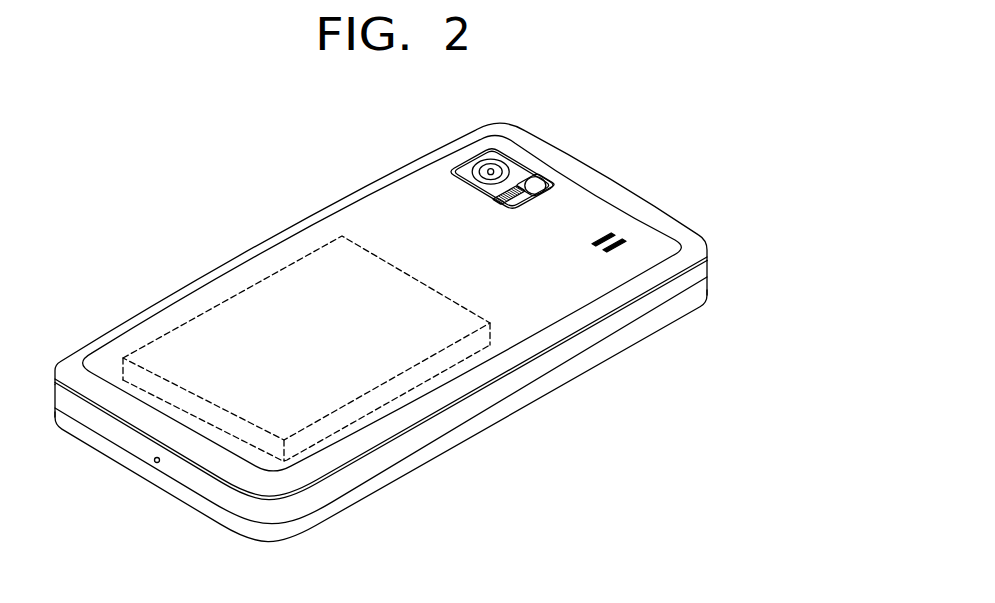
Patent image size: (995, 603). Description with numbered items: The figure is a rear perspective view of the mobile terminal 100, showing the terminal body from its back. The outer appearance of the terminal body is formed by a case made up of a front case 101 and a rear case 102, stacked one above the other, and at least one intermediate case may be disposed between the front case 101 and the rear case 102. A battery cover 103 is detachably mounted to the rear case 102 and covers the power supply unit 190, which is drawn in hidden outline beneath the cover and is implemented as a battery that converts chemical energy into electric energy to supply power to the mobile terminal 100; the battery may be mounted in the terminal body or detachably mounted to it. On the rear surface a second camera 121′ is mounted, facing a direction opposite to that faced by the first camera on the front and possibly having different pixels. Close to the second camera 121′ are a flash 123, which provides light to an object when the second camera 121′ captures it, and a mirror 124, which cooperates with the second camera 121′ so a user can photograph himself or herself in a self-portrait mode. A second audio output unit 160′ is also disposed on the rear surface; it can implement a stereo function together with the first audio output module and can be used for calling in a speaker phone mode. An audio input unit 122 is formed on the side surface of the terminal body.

The mobile terminal 100 is at (253, 225).
The front case 101 is at (703, 297).
The rear case 102 is at (703, 277).
The battery cover 103 is at (704, 242).
The second camera 121′ is at (491, 171).
The audio input unit 122 is at (154, 462).
The flash 123 is at (525, 200).
The mirror 124 is at (538, 185).
The second audio output unit 160′ is at (619, 238).
The power supply unit 190 is at (238, 302).